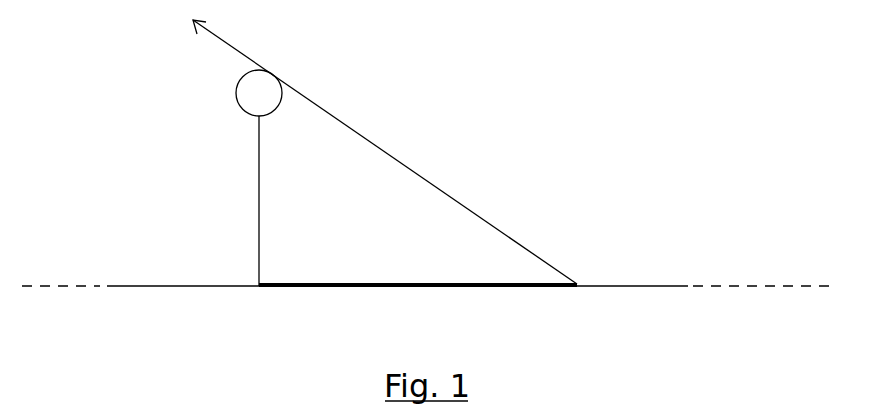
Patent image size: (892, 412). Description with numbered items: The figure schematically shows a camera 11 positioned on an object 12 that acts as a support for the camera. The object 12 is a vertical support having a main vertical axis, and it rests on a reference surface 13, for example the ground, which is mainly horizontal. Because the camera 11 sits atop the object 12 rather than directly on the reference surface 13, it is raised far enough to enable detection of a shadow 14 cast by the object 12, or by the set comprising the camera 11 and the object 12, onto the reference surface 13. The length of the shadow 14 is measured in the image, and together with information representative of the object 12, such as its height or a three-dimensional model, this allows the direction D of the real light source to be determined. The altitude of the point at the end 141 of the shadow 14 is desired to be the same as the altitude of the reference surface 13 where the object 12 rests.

The camera 11 is at (248, 93).
The object 12 is at (266, 208).
The reference surface 13 is at (207, 287).
The shadow 14 is at (407, 288).
The end of the shadow 141 is at (571, 288).
The direction of the light source D is at (311, 94).